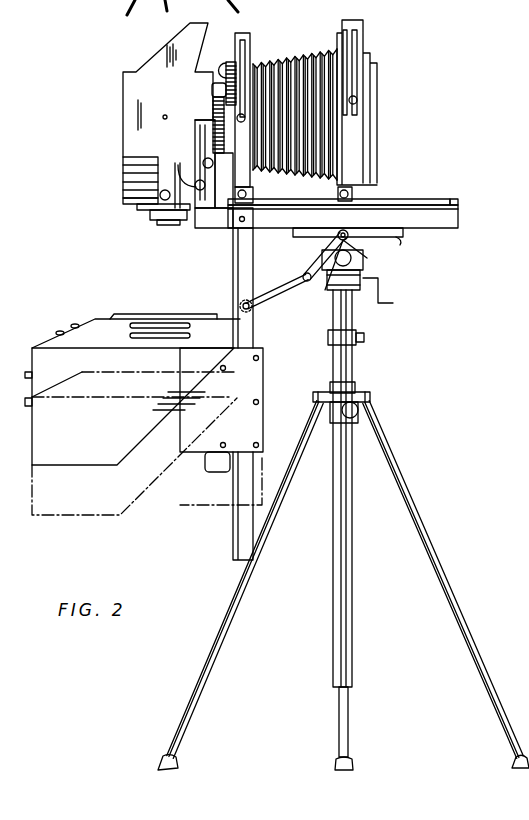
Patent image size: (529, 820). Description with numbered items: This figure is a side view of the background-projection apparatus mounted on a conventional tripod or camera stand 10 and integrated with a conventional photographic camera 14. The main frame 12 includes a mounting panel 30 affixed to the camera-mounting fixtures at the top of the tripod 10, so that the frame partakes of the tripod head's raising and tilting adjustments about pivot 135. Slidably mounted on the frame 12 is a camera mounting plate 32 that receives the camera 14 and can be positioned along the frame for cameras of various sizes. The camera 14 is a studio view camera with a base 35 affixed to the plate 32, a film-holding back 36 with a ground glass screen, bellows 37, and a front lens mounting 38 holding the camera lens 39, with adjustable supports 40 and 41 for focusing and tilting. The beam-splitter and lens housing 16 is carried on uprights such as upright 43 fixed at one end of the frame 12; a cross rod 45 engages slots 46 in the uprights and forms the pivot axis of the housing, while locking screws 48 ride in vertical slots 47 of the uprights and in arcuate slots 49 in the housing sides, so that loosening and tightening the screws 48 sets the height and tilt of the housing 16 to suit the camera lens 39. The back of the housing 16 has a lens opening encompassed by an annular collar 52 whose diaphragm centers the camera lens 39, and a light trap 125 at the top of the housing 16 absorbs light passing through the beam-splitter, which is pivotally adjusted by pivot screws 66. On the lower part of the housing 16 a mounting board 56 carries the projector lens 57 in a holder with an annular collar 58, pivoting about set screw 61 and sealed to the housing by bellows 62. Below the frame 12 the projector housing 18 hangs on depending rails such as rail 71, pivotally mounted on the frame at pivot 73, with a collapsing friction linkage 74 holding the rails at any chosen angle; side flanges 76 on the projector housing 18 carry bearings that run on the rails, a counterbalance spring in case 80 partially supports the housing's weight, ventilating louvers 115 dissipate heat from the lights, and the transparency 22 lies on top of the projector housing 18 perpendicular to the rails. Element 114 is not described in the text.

The tripod or camera stand 10 is at (340, 362).
The main frame 12 is at (458, 216).
The photographic camera 14 is at (361, 18).
The beam-splitter and lens housing 16 is at (127, 80).
The projector housing 18 is at (82, 446).
The transparency 22 is at (113, 317).
The mounting panel 30 is at (400, 237).
The camera mounting plate 32 is at (454, 203).
The base 35 is at (373, 202).
The film-holding back 36 is at (370, 108).
The bellows 37 is at (300, 58).
The front lens mounting 38 is at (228, 68).
The camera lens 39 is at (227, 107).
The adjustable support 40 is at (245, 180).
The adjustable support 41 is at (348, 194).
The upright 43 is at (212, 214).
The cross rod 45 is at (204, 160).
The slot 46 is at (214, 122).
The vertical slot 47 is at (195, 128).
The locking screw 48 is at (197, 181).
The arcuate slot 49 is at (180, 210).
The annular collar 52 is at (216, 83).
The mounting board 56 is at (125, 200).
The projector lens 57 is at (162, 201).
The annular collar 58 is at (137, 207).
The set screw 61 is at (158, 212).
The bellows 62 is at (130, 178).
The adjustable pivot screw 66 is at (163, 117).
The depending rail 71 is at (240, 246).
The pivot 73 is at (239, 220).
The collapsing linkage 74 is at (280, 297).
The side flange 76 is at (263, 391).
The case 80 is at (217, 472).
The element of adjacent figure 114 is at (516, 440).
The ventilating louvers 115 is at (172, 324).
The light trap 125 is at (177, 42).
The pivot 135 is at (364, 262).